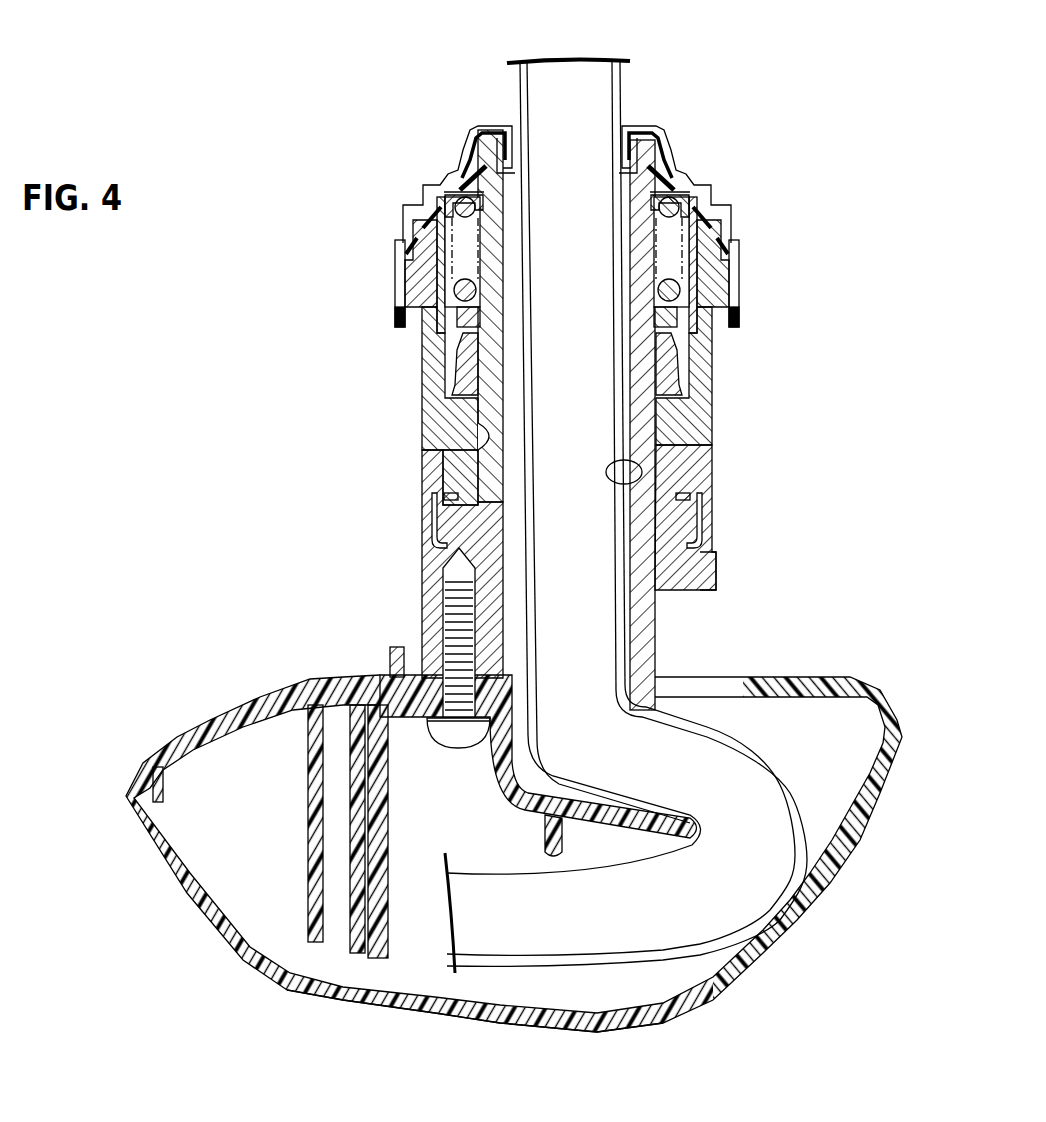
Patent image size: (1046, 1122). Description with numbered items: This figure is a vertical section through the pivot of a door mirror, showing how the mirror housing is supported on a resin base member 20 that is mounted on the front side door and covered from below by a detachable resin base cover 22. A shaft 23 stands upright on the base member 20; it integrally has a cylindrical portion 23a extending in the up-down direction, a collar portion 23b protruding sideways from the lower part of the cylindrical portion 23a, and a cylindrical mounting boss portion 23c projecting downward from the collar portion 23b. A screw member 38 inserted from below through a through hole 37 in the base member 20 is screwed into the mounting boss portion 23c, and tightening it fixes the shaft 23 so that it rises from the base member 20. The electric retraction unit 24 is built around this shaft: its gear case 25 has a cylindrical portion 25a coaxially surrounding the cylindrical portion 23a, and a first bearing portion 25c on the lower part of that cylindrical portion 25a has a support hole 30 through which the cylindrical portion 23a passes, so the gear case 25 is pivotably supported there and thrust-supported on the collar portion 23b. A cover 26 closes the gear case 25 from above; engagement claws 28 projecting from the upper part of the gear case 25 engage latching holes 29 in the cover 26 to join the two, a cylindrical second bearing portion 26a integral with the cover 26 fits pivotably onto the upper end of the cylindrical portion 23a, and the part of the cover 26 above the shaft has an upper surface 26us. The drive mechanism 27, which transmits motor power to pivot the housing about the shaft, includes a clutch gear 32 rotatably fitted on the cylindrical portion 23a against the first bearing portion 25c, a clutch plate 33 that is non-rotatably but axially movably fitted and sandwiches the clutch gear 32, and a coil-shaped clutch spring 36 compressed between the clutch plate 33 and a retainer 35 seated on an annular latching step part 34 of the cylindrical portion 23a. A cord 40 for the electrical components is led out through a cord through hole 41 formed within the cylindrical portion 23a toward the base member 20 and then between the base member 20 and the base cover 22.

The base member 20 is at (238, 713).
The base cover 22 is at (390, 1003).
The shaft 23 is at (661, 625).
The cylindrical portion 23a is at (647, 440).
The collar portion 23b is at (715, 570).
The mounting boss portion 23c is at (420, 595).
The electric retraction unit 24 is at (742, 412).
The gear case 25 is at (421, 400).
The cylindrical portion 25a is at (420, 482).
The first bearing portion 25c is at (472, 485).
The cover 26 is at (425, 185).
The second bearing portion 26a is at (627, 155).
The upper surface 26us is at (648, 125).
The drive mechanism 27 is at (680, 340).
The engagement claw 28 is at (395, 297).
The latching hole 29 is at (400, 260).
The support hole 30 is at (490, 448).
The clutch gear 32 is at (673, 375).
The clutch plate 33 is at (672, 313).
The annular latching step part 34 is at (633, 187).
The retainer 35 is at (692, 198).
The clutch spring 36 is at (452, 292).
The through hole 37 is at (465, 740).
The screw member 38 is at (427, 735).
The cord 40 is at (582, 77).
The cord through hole 41 is at (640, 478).